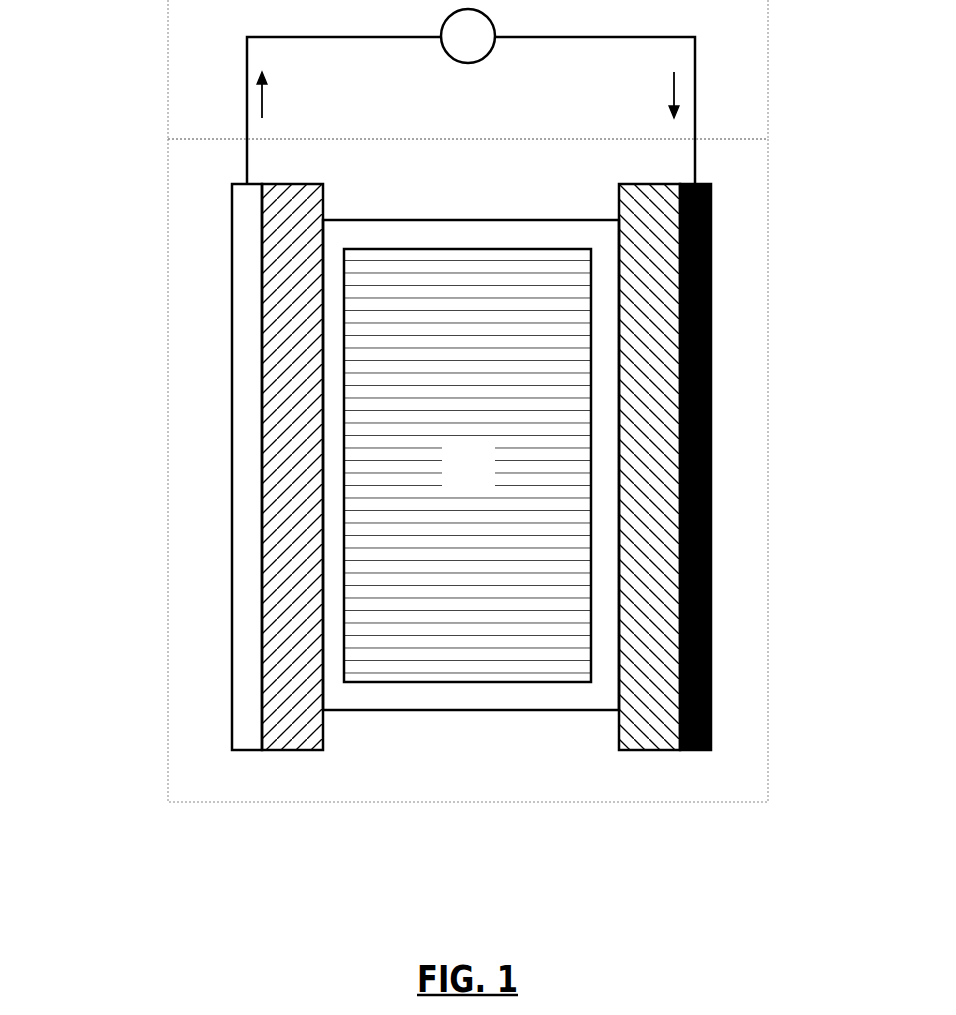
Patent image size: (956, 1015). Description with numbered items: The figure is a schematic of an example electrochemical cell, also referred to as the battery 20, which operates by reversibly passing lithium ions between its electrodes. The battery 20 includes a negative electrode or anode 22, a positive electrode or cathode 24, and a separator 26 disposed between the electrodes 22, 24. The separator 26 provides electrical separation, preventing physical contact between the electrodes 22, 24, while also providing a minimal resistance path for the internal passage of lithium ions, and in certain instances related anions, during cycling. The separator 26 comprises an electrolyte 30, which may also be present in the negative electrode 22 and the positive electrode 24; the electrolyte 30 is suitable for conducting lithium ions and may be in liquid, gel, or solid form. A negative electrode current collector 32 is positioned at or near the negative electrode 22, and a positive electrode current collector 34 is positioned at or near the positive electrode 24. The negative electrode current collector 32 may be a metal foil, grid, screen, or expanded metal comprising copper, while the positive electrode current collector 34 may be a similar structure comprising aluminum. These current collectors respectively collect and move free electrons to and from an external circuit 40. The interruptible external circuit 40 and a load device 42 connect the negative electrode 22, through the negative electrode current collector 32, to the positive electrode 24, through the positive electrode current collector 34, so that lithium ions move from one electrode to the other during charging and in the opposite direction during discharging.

The electrochemical cell 20 is at (162, 219).
The negative electrode 22 is at (650, 750).
The positive electrode 24 is at (292, 750).
The separator 26 is at (470, 710).
The electrolyte 30 is at (467, 465).
The negative electrode current collector 32 is at (711, 465).
The positive electrode current collector 34 is at (232, 465).
The external circuit 40 is at (410, 92).
The load device 42 is at (468, 36).